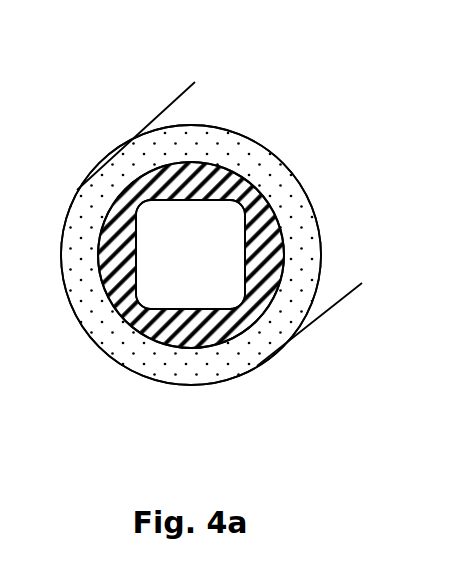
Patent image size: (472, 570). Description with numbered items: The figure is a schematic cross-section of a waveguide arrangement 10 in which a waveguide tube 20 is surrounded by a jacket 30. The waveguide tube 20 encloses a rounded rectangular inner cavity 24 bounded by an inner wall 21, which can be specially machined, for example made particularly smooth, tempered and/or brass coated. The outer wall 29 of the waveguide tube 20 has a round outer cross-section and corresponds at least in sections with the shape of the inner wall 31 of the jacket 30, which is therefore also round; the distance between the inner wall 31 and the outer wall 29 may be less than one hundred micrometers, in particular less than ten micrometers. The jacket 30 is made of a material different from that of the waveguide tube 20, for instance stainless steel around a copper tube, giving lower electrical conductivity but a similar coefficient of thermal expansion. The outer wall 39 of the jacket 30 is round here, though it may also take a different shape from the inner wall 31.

The waveguide arrangement 10 is at (130, 84).
The waveguide tube 20 is at (228, 327).
The inner wall 21 is at (256, 254).
The inner cavity 24 is at (183, 267).
The outer wall 29 is at (236, 221).
The jacket 30 is at (139, 356).
The inner wall 31 is at (185, 163).
The outer wall 39 is at (191, 232).